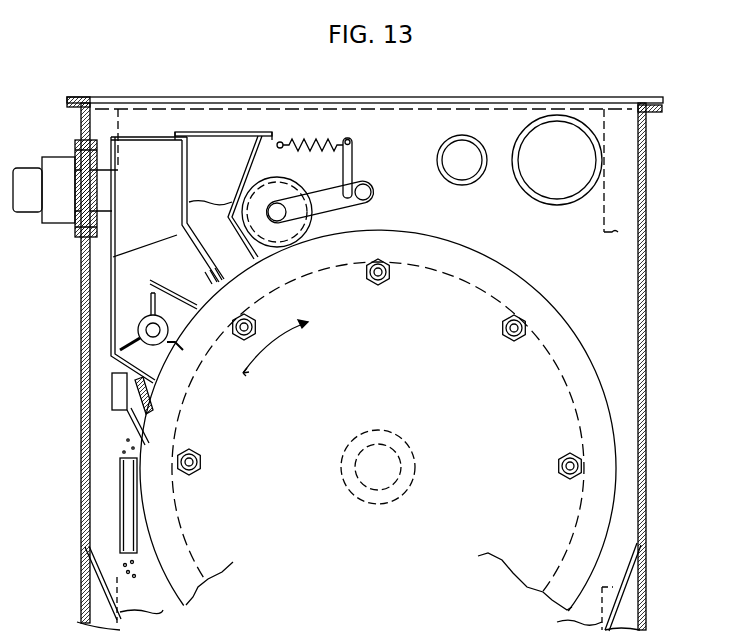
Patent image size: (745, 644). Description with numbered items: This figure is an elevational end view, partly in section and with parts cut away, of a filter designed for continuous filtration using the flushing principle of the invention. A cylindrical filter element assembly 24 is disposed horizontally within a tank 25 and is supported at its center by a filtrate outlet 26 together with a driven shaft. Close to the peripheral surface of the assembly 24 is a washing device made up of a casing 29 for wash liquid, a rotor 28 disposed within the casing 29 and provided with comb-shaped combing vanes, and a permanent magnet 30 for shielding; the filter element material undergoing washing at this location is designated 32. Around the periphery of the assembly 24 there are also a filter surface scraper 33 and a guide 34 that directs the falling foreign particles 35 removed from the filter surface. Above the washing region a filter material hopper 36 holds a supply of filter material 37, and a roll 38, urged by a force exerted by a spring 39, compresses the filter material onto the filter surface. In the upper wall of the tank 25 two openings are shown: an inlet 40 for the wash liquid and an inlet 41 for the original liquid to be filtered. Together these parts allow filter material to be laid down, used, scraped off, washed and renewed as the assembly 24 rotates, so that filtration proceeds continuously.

The cylindrical filter element assembly 24 is at (545, 292).
The tank 25 is at (652, 290).
The filtrate outlet 26 is at (406, 440).
The rotor 28 is at (123, 340).
The casing 29 is at (82, 284).
The permanent magnet 30 is at (138, 386).
The filter element material undergoing washing 32 is at (147, 252).
The filter surface scraper 33 is at (127, 419).
The guide 34 is at (121, 481).
The foreign particles 35 is at (121, 525).
The filter material hopper 36 is at (222, 131).
The filter material 37 is at (206, 204).
The roll 38 is at (287, 182).
The spring 39 is at (306, 139).
The inlet for wash liquid 40 is at (459, 138).
The inlet for original liquid to be filtered 41 is at (530, 132).